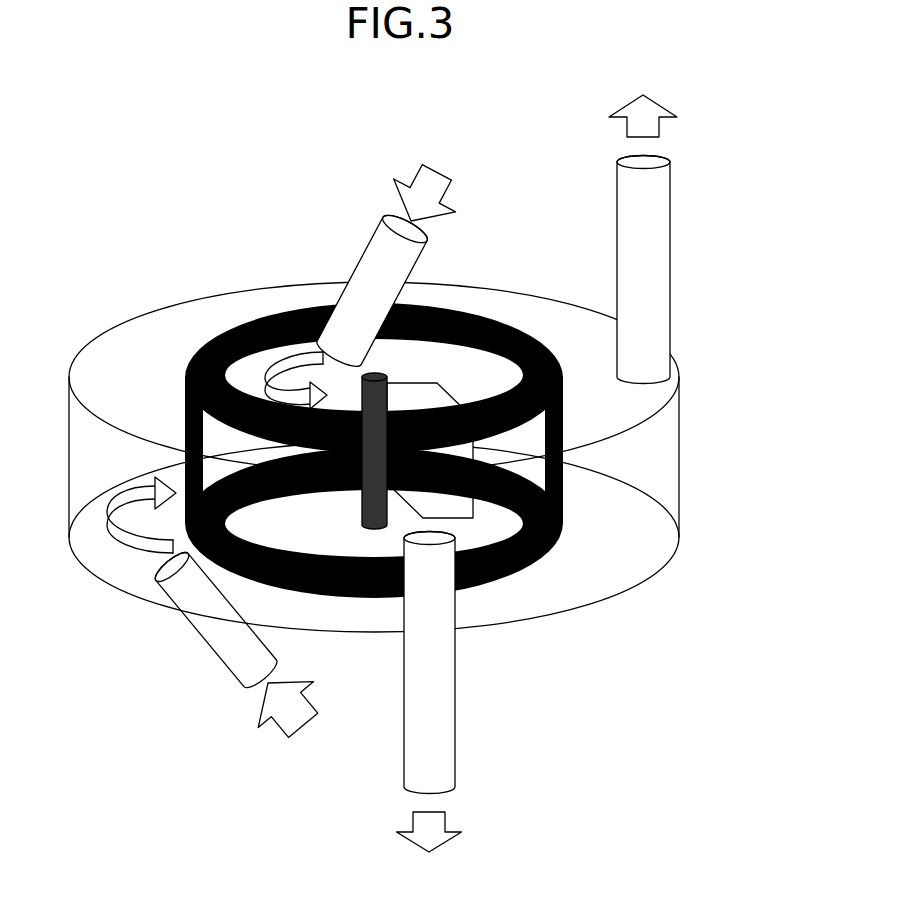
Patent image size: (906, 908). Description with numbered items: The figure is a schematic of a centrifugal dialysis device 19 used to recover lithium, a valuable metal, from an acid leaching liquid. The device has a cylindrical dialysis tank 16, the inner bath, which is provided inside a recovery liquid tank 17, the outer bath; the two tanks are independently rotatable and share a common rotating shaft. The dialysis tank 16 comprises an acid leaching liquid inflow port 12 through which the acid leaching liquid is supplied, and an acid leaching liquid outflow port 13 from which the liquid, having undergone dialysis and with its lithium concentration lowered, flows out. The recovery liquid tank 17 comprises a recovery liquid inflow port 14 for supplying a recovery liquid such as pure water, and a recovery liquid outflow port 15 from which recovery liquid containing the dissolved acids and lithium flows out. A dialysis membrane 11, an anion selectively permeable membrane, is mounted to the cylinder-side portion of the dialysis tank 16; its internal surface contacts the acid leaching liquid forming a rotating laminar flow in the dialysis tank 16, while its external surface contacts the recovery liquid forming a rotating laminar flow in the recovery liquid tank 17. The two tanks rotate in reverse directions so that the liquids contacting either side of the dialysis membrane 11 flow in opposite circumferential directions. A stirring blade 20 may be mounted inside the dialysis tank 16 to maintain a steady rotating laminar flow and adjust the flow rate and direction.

The dialysis membrane 11 is at (183, 418).
The acid leaching liquid inflow port 12 is at (390, 255).
The acid leaching liquid outflow port 13 is at (429, 710).
The recovery liquid inflow port 14 is at (242, 654).
The recovery liquid outflow port 15 is at (643, 223).
The dialysis tank 16 is at (475, 373).
The recovery liquid tank 17 is at (657, 442).
The centrifugal dialysis device 19 is at (206, 812).
The stirring blade 20 is at (400, 397).